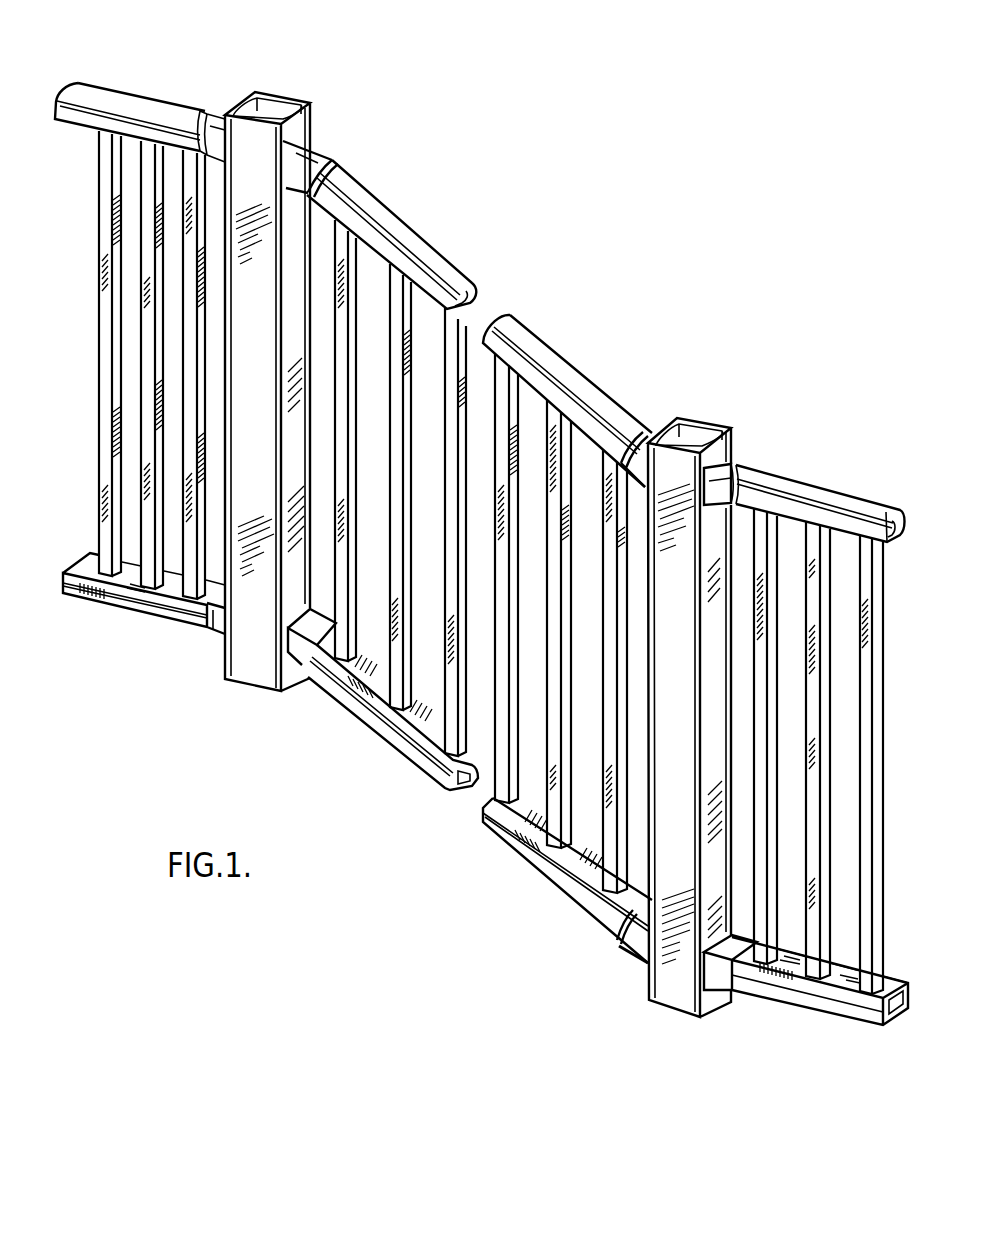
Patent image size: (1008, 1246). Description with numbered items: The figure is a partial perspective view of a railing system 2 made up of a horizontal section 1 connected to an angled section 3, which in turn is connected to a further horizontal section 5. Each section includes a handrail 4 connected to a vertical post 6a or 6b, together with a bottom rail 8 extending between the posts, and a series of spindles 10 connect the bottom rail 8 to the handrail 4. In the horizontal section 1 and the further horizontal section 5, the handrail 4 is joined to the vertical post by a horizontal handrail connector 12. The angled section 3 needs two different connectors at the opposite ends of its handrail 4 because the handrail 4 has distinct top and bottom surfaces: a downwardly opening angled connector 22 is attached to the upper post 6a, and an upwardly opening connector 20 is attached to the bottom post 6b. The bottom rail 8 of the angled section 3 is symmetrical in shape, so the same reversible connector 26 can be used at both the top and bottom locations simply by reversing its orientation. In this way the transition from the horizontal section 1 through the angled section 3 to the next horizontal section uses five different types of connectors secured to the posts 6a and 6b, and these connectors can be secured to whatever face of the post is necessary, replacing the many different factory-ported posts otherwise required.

The horizontal section 1 is at (129, 627).
The railing system 2 is at (597, 257).
The angled section 3 is at (482, 845).
The handrail 4 is at (455, 240).
The further horizontal section 5 is at (871, 489).
The vertical post 6a is at (324, 116).
The vertical post 6b is at (735, 407).
The bottom rail 8 is at (414, 779).
The spindles 10 is at (437, 677).
The horizontal handrail connector 12 is at (214, 117).
The upwardly opening connector 20 is at (635, 441).
The downwardly opening angled connector 22 is at (342, 155).
The reversible connector 26 is at (304, 658).